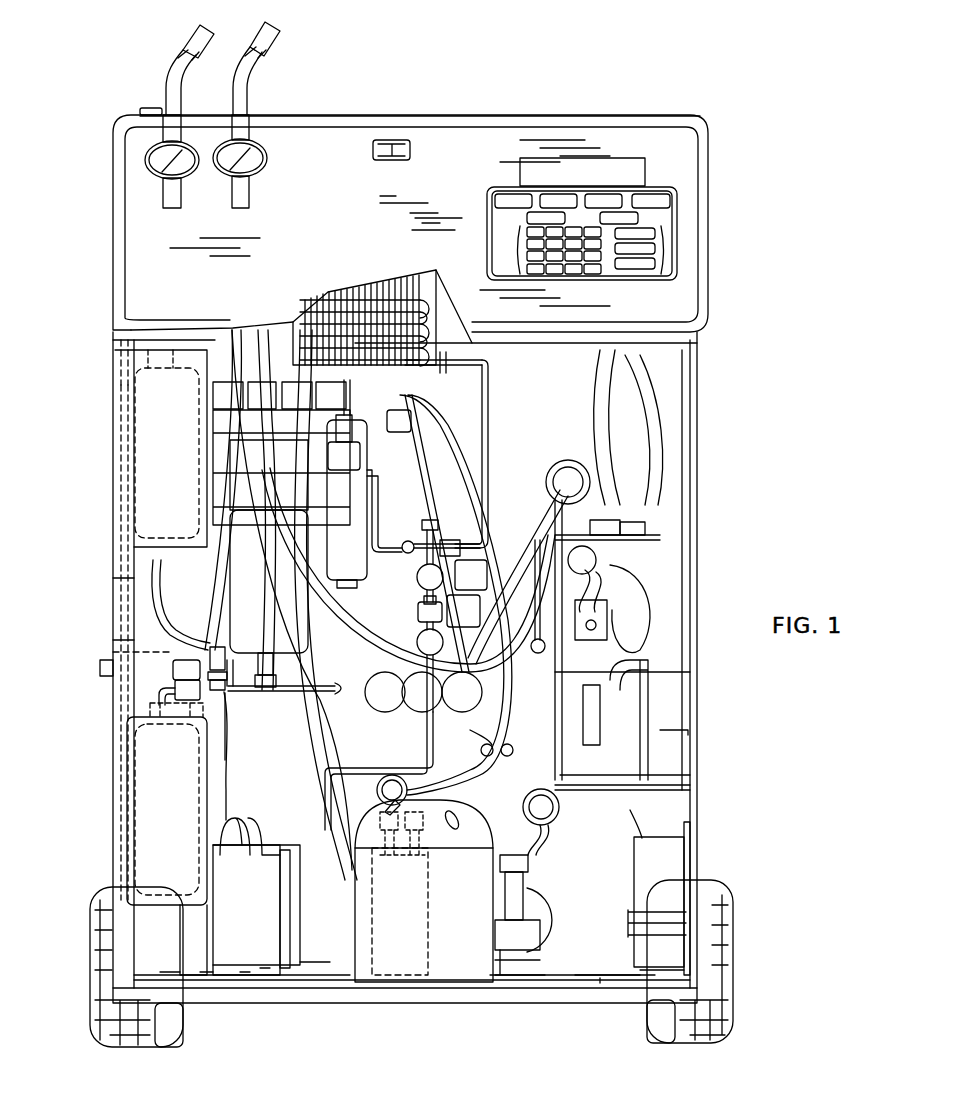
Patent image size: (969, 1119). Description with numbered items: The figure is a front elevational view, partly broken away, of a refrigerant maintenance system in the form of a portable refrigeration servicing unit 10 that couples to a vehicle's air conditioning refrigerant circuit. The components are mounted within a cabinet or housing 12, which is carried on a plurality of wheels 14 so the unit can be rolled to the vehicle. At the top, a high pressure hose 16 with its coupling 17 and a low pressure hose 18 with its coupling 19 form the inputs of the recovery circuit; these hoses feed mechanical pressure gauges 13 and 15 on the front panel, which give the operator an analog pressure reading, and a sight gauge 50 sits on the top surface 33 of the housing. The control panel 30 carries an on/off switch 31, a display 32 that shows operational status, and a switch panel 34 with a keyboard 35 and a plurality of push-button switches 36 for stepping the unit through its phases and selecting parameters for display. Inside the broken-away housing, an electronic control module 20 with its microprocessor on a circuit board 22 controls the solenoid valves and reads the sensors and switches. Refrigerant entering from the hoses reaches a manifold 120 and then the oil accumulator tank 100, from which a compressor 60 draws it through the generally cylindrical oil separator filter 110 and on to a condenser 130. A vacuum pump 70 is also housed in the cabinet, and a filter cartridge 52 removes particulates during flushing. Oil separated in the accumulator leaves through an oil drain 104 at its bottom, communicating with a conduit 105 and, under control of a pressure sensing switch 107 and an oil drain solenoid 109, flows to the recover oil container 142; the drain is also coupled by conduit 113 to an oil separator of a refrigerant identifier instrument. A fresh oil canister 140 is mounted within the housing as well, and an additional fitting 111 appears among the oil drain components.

The refrigeration servicing unit 10 is at (590, 98).
The housing 12 is at (705, 746).
The mechanical pressure gauge 13 is at (262, 175).
The wheels 14 is at (180, 1047).
The mechanical pressure gauge 15 is at (188, 178).
The high pressure hose 16 is at (248, 92).
The coupling 17 is at (275, 37).
The low pressure hose 18 is at (168, 80).
The coupling 19 is at (192, 38).
The electronic control module 20 is at (640, 565).
The circuit board 22 is at (650, 777).
The control panel 30 is at (445, 140).
The on/off switch 31 is at (395, 140).
The display 32 is at (648, 173).
The top surface 33 is at (328, 116).
The switch panel 34 is at (660, 214).
The keyboard 35 is at (607, 278).
The push-button switches 36 is at (512, 200).
The sight gauge 50 is at (112, 111).
The filter cartridge 52 is at (122, 366).
The compressor 60 is at (448, 972).
The vacuum pump 70 is at (302, 962).
The oil accumulator tank 100 is at (315, 636).
The oil drain 104 is at (264, 700).
The conduit 105 is at (240, 695).
The pressure sensing switch 107 is at (172, 655).
The oil drain solenoid 109 is at (205, 652).
The solenoid valve 111 is at (215, 692).
The conduit 113 is at (390, 708).
The oil separator filter 110 is at (372, 560).
The manifold 120 is at (322, 430).
The condenser 130 is at (430, 337).
The fresh oil canister 140 is at (116, 425).
The recover oil container 142 is at (125, 790).